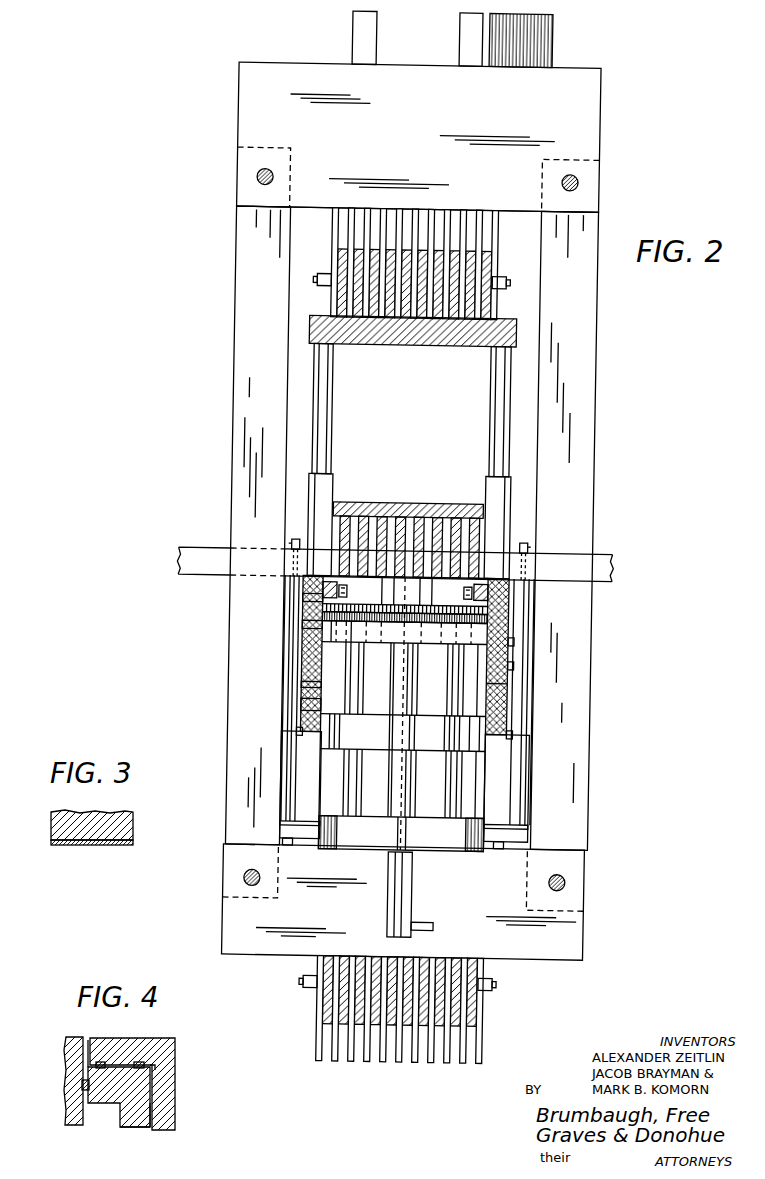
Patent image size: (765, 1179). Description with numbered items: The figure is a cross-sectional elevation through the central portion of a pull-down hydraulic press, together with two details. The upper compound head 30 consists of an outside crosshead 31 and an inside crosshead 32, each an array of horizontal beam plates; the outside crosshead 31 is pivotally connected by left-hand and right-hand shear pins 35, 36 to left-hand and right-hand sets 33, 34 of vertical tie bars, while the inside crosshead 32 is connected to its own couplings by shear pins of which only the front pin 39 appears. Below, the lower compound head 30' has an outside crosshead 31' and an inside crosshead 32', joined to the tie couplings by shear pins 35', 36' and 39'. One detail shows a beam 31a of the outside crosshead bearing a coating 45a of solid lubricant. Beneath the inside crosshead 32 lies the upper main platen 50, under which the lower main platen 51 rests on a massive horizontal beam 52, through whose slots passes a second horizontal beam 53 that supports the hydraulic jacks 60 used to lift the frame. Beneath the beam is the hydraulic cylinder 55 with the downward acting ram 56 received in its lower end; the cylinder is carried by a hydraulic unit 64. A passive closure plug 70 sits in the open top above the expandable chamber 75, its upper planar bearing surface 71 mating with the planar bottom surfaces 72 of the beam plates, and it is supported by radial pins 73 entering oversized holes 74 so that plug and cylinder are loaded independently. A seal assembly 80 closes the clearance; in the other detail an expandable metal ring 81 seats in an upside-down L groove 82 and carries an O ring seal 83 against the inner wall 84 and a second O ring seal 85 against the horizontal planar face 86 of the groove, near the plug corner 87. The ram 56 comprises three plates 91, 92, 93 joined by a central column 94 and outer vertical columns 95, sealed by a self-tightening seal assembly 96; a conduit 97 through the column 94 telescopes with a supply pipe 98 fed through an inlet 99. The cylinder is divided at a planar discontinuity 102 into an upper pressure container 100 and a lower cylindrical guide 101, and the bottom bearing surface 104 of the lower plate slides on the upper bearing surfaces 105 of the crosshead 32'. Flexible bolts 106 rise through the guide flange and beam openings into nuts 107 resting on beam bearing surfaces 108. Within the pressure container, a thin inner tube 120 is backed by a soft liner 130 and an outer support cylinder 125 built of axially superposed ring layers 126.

In FIG. 2, the upper compound head 30 is at (454, 193).
In FIG. 2, the outside crosshead 31 is at (432, 163).
In FIG. 2, the inside crosshead 32 is at (394, 263).
In FIG. 2, the left-hand set of vertical tie bars 33 is at (238, 300).
In FIG. 2, the right-hand set of vertical tie bars 34 is at (595, 312).
In FIG. 2, the left-hand shear pin 35 is at (242, 176).
In FIG. 2, the right-hand shear pin 36 is at (587, 184).
In FIG. 2, the front shear pin 39 is at (420, 265).
In FIG. 2, the upper main platen 50 is at (358, 340).
In FIG. 2, the lower main platen 51 is at (417, 503).
In FIG. 2, the horizontal beam 52 is at (332, 523).
In FIG. 2, the second horizontal beam 53 is at (601, 562).
In FIG. 2, the hydraulic cylinder 55 is at (517, 667).
In FIG. 4, the hydraulic cylinder 55 is at (70, 1093).
In FIG. 2, the ram 56 is at (482, 781).
In FIG. 2, the hydraulic jacks 60 is at (327, 492).
In FIG. 2, the hydraulic cylinder 64 is at (576, 36).
In FIG. 2, the closure plug 70 is at (432, 620).
In FIG. 4, the closure plug 70 is at (172, 1104).
In FIG. 2, the upper planar bearing surface 71 is at (386, 583).
In FIG. 2, the planar bottom surfaces 72 is at (450, 613).
In FIG. 2, the radial pins 73 is at (345, 593).
In FIG. 2, the holes 74 is at (336, 580).
In FIG. 2, the expandable chamber 75 is at (370, 622).
In FIG. 2, the seal assembly 80 is at (310, 605).
In FIG. 4, the seal assembly 80 is at (105, 1110).
In FIG. 4, the resiliently expandable metal ring 81 is at (141, 1126).
In FIG. 4, the groove 82 is at (160, 1068).
In FIG. 4, the O ring seal 83 is at (84, 1085).
In FIG. 4, the inner wall 84 is at (88, 1040).
In FIG. 4, the second O ring seal 85 is at (140, 1063).
In FIG. 4, the horizontal planar face 86 is at (100, 1063).
In FIG. 4, the plug corner 87 is at (151, 1125).
In FIG. 2, the ram plate 91 is at (431, 674).
In FIG. 2, the ram plate 92 is at (382, 739).
In FIG. 2, the lower ram plate 93 is at (435, 838).
In FIG. 2, the central column 94 is at (412, 687).
In FIG. 2, the outer vertical columns 95 is at (366, 688).
In FIG. 2, the fluid seal assembly 96 is at (348, 622).
In FIG. 2, the conduit 97 is at (402, 730).
In FIG. 2, the supply pipe 98 is at (413, 890).
In FIG. 2, the inlet 99 is at (430, 922).
In FIG. 2, the upper pressure container 100 is at (517, 640).
In FIG. 2, the lower cylindrical guide 101 is at (307, 762).
In FIG. 2, the discontinuity 102 is at (294, 733).
In FIG. 2, the bottom planar bearing surface 104 is at (343, 846).
In FIG. 2, the upper planar bearing surfaces 105 is at (457, 847).
In FIG. 2, the flexible bolts 106 is at (520, 604).
In FIG. 2, the nuts 107 is at (292, 542).
In FIG. 2, the beam bearing surfaces 108 is at (286, 546).
In FIG. 2, the inner tube 120 is at (508, 686).
In FIG. 2, the outer support cylinder 125 is at (300, 627).
In FIG. 2, the ring layers 126 is at (303, 712).
In FIG. 2, the liner 130 is at (305, 688).
In FIG. 3, the beam 31a is at (130, 820).
In FIG. 3, the coating 45a is at (75, 846).
In FIG. 2, the lower compound head 30' is at (440, 903).
In FIG. 2, the outside crosshead 31' is at (379, 1010).
In FIG. 2, the inside crosshead 32' is at (431, 992).
In FIG. 2, the shear pin 35' is at (231, 870).
In FIG. 2, the shear pin 36' is at (576, 880).
In FIG. 2, the shear pin 39' is at (412, 991).